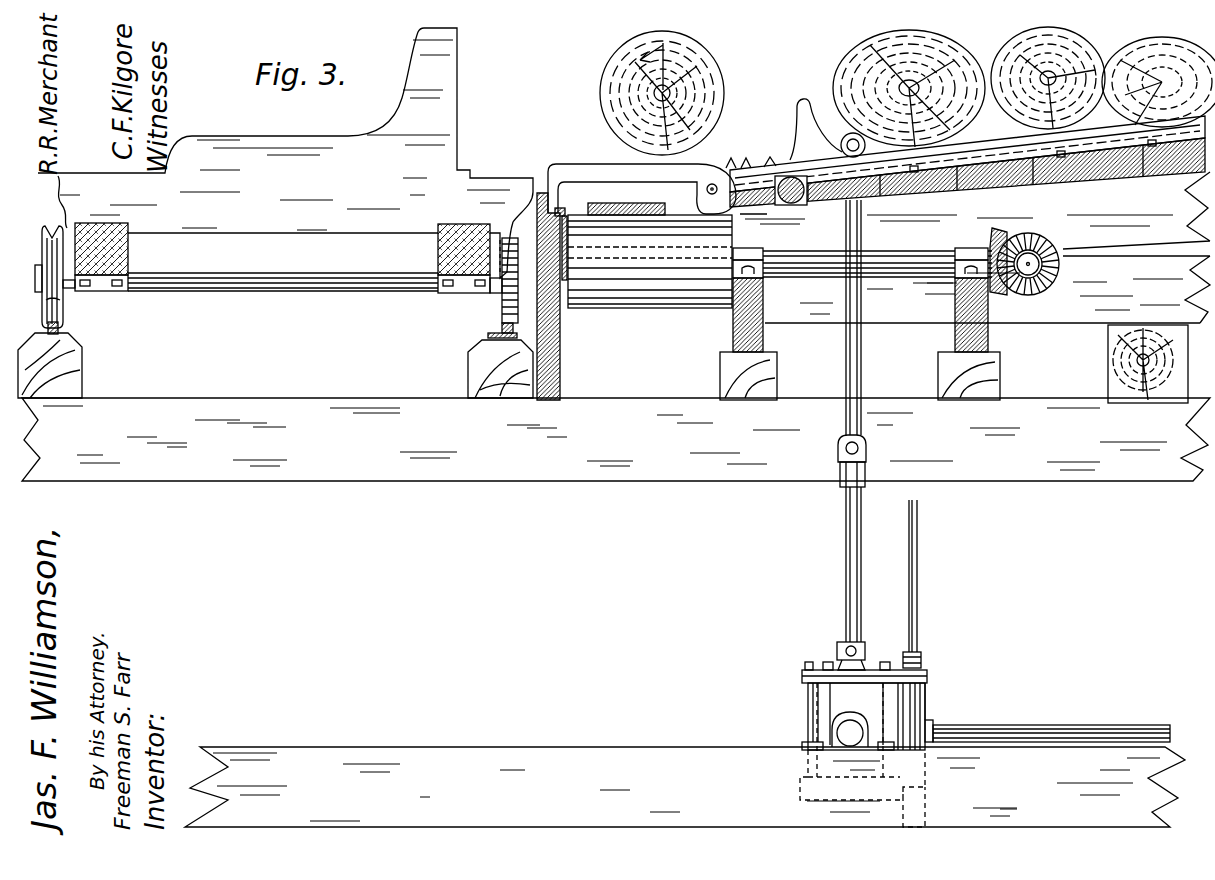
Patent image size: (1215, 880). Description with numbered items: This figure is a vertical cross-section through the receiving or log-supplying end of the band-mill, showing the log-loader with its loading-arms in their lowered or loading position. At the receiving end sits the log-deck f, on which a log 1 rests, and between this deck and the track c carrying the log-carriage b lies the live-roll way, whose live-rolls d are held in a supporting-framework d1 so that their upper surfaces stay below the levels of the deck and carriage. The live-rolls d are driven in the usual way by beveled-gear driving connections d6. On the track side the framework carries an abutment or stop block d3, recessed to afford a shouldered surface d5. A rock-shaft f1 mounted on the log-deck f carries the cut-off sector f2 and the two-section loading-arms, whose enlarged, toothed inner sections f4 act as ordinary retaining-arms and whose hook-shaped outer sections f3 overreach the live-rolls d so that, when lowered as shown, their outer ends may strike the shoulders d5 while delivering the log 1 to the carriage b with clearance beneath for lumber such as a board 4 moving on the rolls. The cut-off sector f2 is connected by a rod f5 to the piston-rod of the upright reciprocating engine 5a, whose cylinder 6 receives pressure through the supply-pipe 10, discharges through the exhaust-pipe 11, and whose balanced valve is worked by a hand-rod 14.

The log 1 is at (718, 100).
The log-carriage b is at (468, 185).
The track c is at (64, 328).
The live-rolls d is at (663, 309).
The supporting-framework d1 is at (563, 362).
The abutment or stop block d3 is at (545, 191).
The shouldered surface d5 is at (566, 215).
The beveled-gear driving connections d6 is at (1002, 294).
The board 4 is at (642, 213).
The log-deck f is at (1103, 163).
The rock-shaft f1 is at (776, 205).
The cut-off sector f2 is at (806, 100).
The outer section of loading-arm f3 is at (590, 164).
The inner section of loading-arm f4 is at (740, 158).
The rod f5 is at (862, 348).
The upright reciprocating engine 5a is at (806, 700).
The cylinder 6 is at (930, 693).
The supply-pipe 10 is at (972, 724).
The exhaust-pipe 11 is at (928, 812).
The hand-rod 14 is at (908, 590).